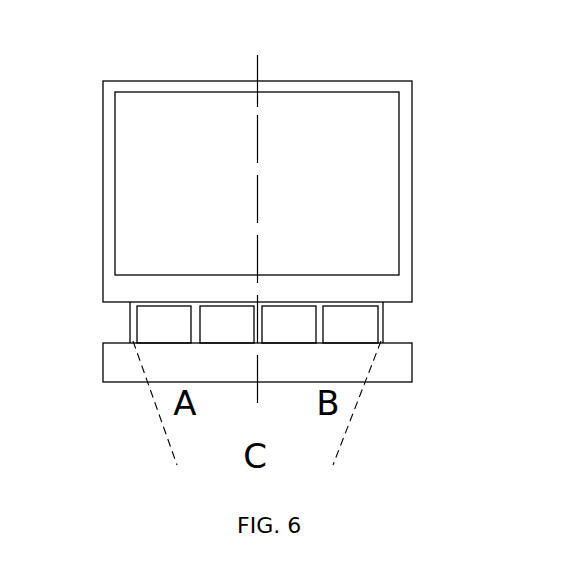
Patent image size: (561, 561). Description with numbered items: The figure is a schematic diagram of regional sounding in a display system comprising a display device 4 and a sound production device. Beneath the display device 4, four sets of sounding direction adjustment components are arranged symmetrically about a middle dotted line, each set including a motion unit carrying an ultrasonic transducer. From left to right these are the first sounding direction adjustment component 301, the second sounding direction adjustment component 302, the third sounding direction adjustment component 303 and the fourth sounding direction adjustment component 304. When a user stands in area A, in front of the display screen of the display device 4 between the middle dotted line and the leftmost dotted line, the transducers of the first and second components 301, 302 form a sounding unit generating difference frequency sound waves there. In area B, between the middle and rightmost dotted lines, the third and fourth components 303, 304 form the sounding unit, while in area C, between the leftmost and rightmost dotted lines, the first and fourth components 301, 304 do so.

The display device 4 is at (321, 86).
The first sounding direction adjustment component 301 is at (157, 327).
The second sounding direction adjustment component 302 is at (233, 337).
The third sounding direction adjustment component 303 is at (296, 332).
The fourth sounding direction adjustment component 304 is at (367, 328).